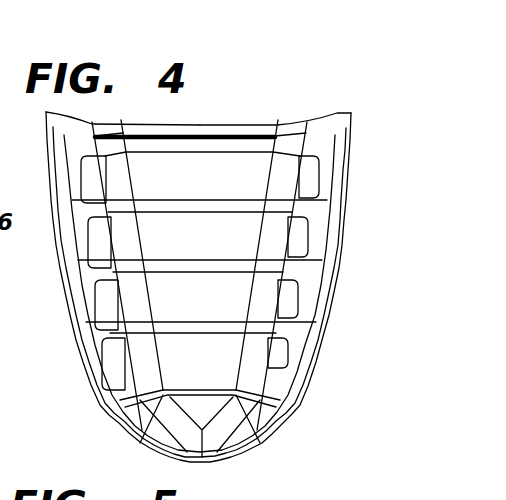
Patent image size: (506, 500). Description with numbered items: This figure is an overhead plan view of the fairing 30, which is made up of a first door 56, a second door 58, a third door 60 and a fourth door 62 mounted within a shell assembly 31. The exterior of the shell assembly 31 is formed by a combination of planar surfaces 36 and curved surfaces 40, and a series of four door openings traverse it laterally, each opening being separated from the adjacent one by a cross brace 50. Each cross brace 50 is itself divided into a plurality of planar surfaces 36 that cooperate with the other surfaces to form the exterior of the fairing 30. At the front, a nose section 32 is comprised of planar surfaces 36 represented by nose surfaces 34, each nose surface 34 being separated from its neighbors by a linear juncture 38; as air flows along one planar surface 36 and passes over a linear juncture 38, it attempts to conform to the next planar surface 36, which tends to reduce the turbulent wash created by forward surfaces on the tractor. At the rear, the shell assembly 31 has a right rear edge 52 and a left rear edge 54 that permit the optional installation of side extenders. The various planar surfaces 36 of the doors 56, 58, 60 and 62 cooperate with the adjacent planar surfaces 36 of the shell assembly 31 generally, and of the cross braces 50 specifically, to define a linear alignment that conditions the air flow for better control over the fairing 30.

The fairing 30 is at (333, 436).
The shell assembly 31 is at (120, 415).
The nose section 32 is at (193, 458).
The nose surface 34 is at (227, 443).
The planar surface 36 is at (235, 170).
The linear juncture 38 is at (258, 443).
The curved surface 40 is at (80, 330).
The cross brace 50 is at (113, 272).
The right rear edge 52 is at (46, 112).
The left rear edge 54 is at (353, 112).
The first door 56 is at (253, 368).
The second door 58 is at (265, 300).
The third door 60 is at (277, 244).
The fourth door 62 is at (285, 188).